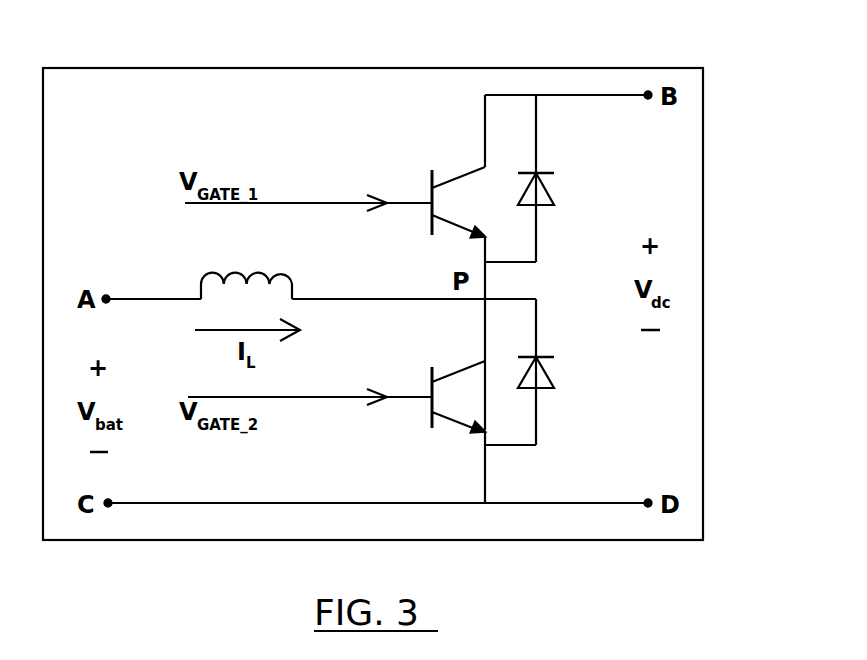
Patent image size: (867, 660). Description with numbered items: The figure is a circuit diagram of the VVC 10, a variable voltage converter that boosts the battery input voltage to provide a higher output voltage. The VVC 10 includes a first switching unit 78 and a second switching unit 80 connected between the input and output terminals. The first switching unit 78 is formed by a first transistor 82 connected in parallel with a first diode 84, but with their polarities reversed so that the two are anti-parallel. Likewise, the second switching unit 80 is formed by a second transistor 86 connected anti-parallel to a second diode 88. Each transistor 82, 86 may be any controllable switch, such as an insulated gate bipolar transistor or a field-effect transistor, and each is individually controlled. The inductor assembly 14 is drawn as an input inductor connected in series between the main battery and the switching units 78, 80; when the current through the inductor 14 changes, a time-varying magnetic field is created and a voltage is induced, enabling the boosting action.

The VVC 10 is at (603, 68).
The inductor assembly 14 is at (210, 275).
The first switching unit 78 is at (335, 180).
The second switching unit 80 is at (337, 391).
The first transistor 82 is at (432, 226).
The first diode 84 is at (542, 207).
The second transistor 86 is at (430, 371).
The second diode 88 is at (542, 390).